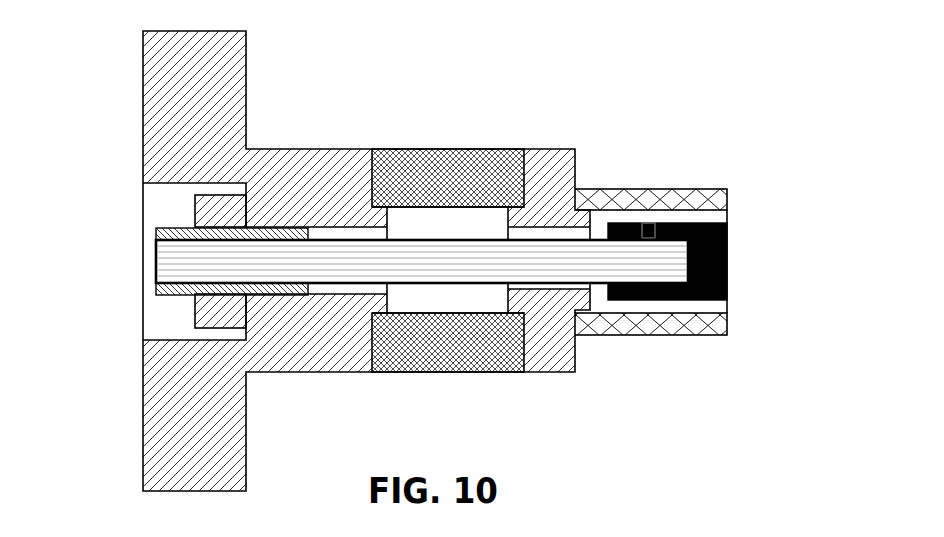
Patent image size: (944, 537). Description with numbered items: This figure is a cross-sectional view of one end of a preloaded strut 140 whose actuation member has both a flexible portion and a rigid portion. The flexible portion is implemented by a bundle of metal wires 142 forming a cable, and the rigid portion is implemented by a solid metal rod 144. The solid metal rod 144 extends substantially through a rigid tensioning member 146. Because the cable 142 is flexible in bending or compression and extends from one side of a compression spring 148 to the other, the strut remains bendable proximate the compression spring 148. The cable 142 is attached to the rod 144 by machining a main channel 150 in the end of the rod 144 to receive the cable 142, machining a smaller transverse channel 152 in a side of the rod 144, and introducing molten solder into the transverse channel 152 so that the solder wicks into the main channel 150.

The strut 140 is at (106, 84).
The bundle of metal wires 142 is at (442, 230).
The solid metal rod 144 is at (703, 223).
The rigid tensioning member 146 is at (618, 189).
The compression spring 148 is at (488, 149).
The main channel 150 is at (650, 281).
The transverse channel 152 is at (652, 224).